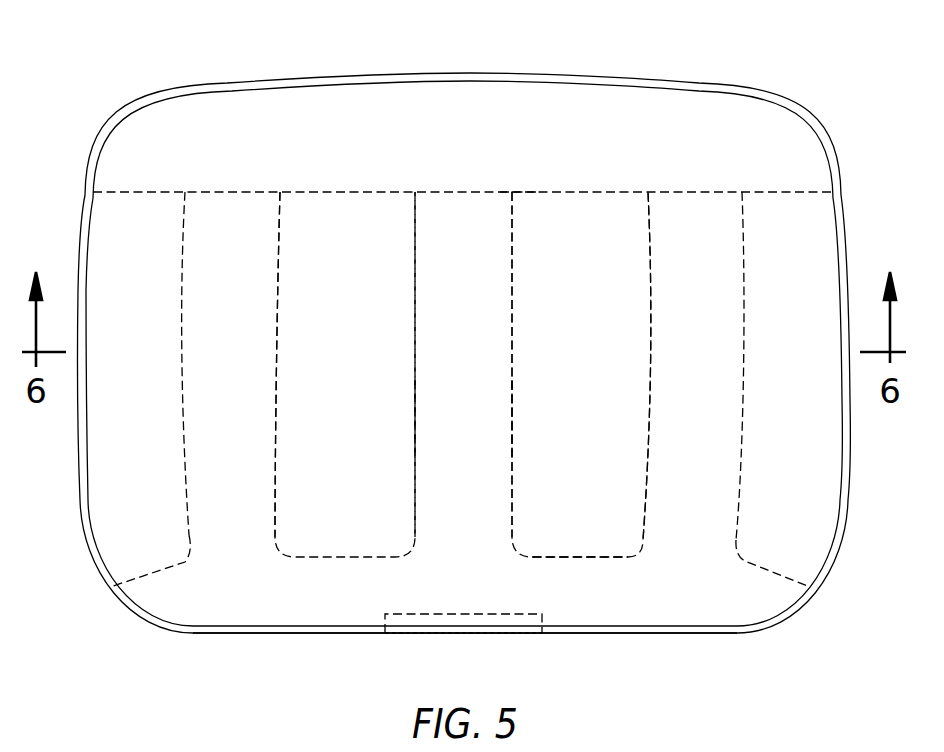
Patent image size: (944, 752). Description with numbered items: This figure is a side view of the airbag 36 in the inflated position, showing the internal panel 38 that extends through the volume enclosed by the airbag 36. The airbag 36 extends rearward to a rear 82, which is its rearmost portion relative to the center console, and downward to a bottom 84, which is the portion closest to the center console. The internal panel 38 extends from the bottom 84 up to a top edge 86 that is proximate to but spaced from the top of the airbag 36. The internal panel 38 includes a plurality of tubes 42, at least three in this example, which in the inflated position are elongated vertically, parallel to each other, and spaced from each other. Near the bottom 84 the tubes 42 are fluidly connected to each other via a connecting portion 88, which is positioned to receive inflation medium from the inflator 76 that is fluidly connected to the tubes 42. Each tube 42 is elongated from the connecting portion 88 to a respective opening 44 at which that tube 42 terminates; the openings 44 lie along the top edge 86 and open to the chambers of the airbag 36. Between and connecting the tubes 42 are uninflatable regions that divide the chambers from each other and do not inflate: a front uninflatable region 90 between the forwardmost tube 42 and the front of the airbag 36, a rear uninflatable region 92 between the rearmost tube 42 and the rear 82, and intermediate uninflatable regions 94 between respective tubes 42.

The airbag 36 is at (142, 57).
The internal panel 38 is at (585, 183).
The tube 42 is at (275, 325).
The opening 44 is at (240, 190).
The inflator 76 is at (440, 613).
The rear 82 is at (846, 232).
The bottom 84 is at (308, 634).
The top edge 86 is at (535, 190).
The connecting portion 88 is at (570, 556).
The front uninflatable region 90 is at (120, 476).
The rear uninflatable region 92 is at (805, 475).
The intermediate uninflatable region 94 is at (388, 418).